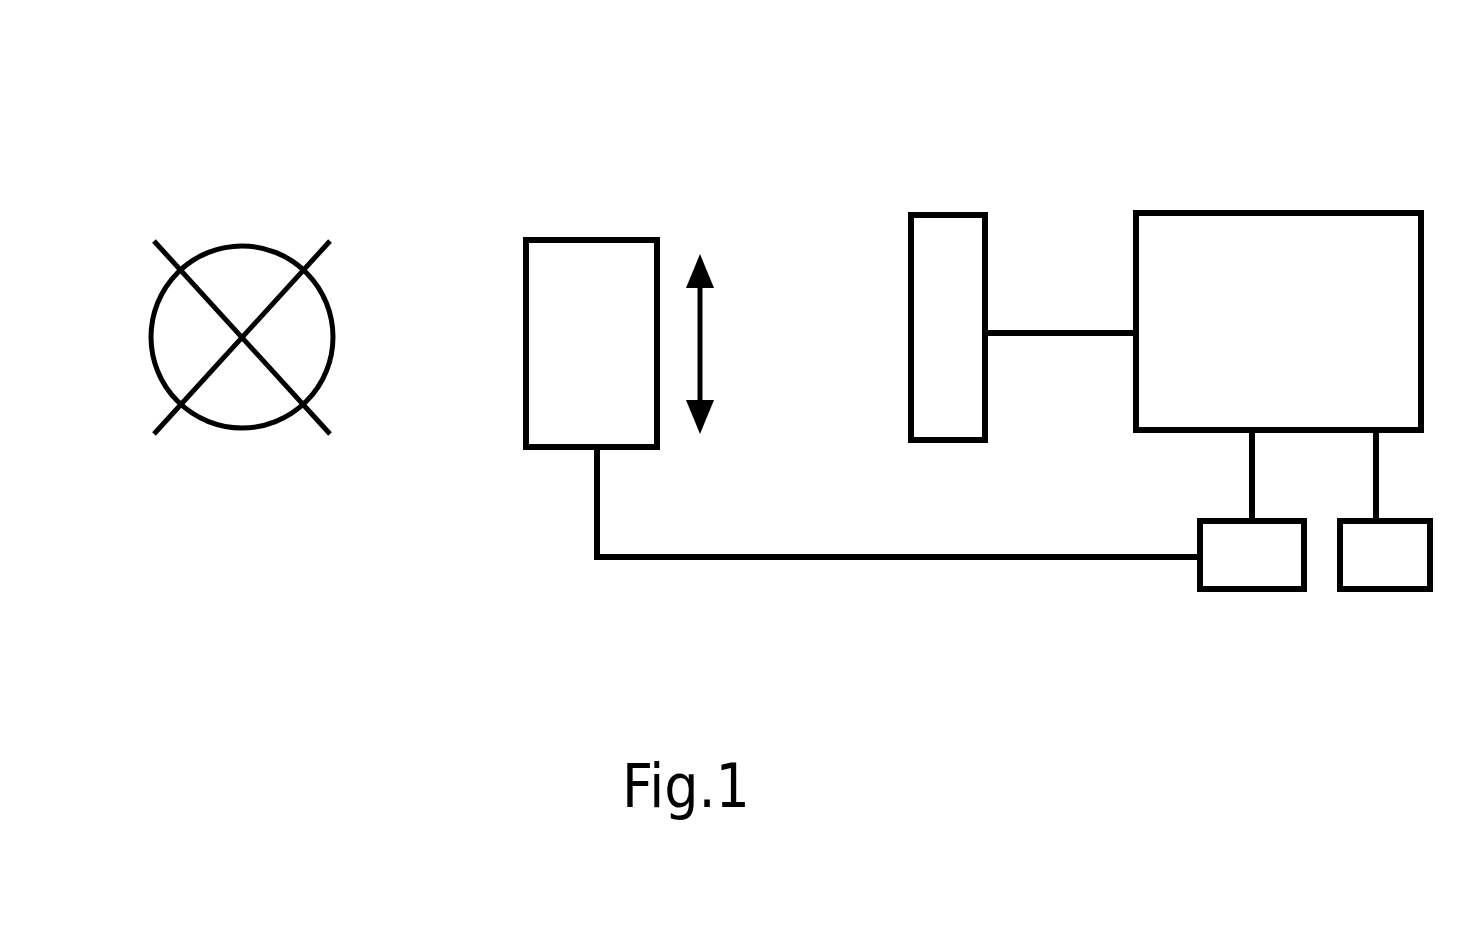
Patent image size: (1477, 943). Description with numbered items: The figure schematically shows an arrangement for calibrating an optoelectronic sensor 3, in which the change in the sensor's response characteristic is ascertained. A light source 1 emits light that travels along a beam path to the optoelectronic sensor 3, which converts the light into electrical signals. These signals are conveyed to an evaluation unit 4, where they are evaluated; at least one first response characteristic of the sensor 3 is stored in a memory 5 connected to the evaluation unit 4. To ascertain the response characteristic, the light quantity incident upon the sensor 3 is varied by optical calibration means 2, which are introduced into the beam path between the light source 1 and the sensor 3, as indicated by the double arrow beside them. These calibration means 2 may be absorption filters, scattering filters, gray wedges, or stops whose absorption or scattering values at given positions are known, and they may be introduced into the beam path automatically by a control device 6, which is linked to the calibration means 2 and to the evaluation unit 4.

The light source 1 is at (257, 240).
The optical calibration means 2 is at (595, 245).
The optoelectronic sensor 3 is at (937, 213).
The evaluation unit 4 is at (1240, 210).
The memory 5 is at (1393, 555).
The control device 6 is at (1250, 555).